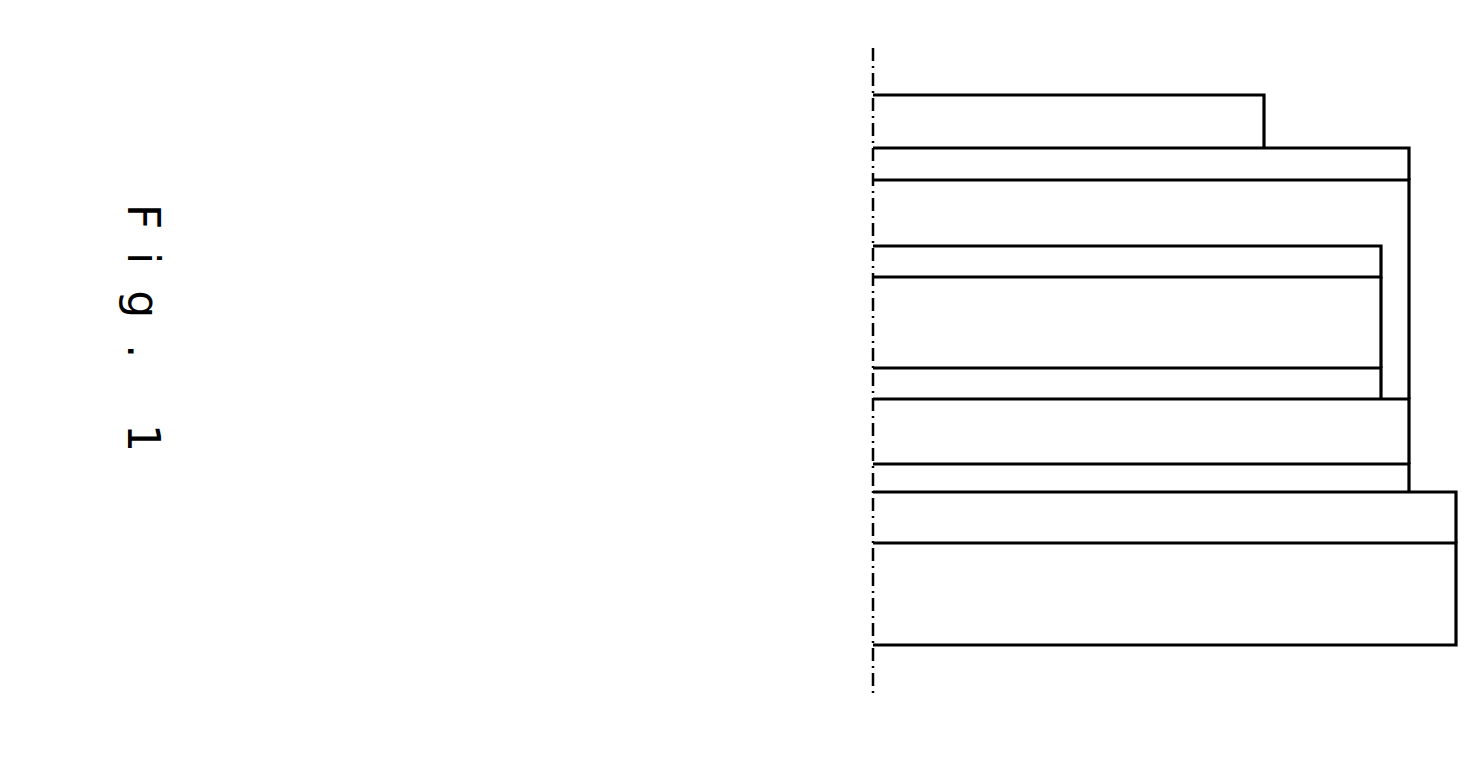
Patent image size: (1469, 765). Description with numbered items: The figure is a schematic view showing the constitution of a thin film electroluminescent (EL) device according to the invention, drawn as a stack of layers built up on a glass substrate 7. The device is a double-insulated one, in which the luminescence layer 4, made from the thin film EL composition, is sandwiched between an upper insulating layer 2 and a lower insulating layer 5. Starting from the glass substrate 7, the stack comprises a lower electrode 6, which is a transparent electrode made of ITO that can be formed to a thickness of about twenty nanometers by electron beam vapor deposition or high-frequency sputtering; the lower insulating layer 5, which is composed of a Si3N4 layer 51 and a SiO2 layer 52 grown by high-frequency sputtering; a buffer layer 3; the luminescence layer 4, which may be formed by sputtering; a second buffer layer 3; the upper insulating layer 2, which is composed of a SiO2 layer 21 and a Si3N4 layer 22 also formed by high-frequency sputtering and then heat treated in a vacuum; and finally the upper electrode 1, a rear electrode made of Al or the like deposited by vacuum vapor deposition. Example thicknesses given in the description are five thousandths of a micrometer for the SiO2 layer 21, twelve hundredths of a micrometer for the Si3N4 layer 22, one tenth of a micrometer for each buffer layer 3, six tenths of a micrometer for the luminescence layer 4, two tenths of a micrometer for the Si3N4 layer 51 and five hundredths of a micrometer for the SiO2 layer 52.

The upper electrode 1 is at (892, 106).
The upper insulating layer 2 is at (415, 112).
The SiO2 layer 21 is at (892, 160).
The Si3N4 layer 22 is at (892, 207).
The buffer layer 3 is at (892, 262).
The luminescence layer 4 is at (892, 327).
The lower insulating layer 5 is at (412, 387).
The Si3N4 layer 51 is at (892, 421).
The SiO2 layer 52 is at (892, 476).
The lower electrode 6 is at (892, 522).
The glass substrate 7 is at (892, 597).